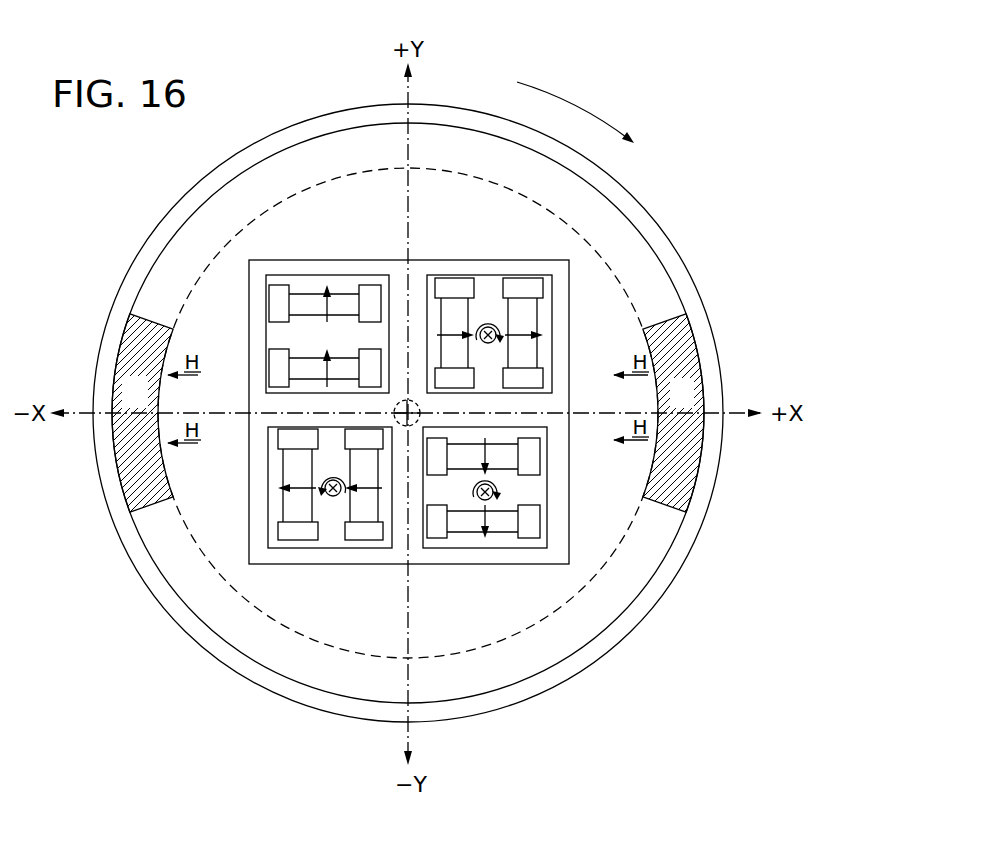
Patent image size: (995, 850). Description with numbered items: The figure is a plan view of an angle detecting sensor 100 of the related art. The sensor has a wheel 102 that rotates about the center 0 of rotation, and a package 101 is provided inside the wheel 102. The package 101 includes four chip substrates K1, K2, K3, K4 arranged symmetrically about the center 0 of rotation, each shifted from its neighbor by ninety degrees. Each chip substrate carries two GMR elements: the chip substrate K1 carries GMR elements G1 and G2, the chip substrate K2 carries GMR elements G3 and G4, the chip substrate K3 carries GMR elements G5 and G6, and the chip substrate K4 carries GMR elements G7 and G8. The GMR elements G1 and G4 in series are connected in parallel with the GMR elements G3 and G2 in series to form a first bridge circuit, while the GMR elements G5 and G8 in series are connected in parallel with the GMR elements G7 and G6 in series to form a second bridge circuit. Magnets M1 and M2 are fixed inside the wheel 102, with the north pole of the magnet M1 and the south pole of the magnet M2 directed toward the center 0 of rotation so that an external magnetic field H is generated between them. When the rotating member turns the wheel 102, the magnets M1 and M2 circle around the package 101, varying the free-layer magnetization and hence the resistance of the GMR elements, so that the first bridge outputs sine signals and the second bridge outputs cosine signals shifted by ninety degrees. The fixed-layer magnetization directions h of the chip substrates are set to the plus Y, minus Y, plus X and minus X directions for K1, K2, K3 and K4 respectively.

The angle detecting sensor 100 is at (715, 98).
The package 101 is at (569, 285).
The wheel 102 is at (633, 210).
The magnet M1 is at (688, 345).
The magnet M2 is at (137, 362).
The center of rotation 0 is at (421, 409).
The chip substrate K1 is at (307, 275).
The chip substrate K2 is at (457, 548).
The chip substrate K3 is at (553, 328).
The chip substrate K4 is at (268, 505).
The GMR element G1 is at (303, 302).
The GMR element G2 is at (302, 370).
The GMR element G3 is at (507, 522).
The GMR element G4 is at (507, 457).
The GMR element G5 is at (523, 307).
The GMR element G6 is at (452, 307).
The GMR element G7 is at (298, 513).
The GMR element G8 is at (363, 513).